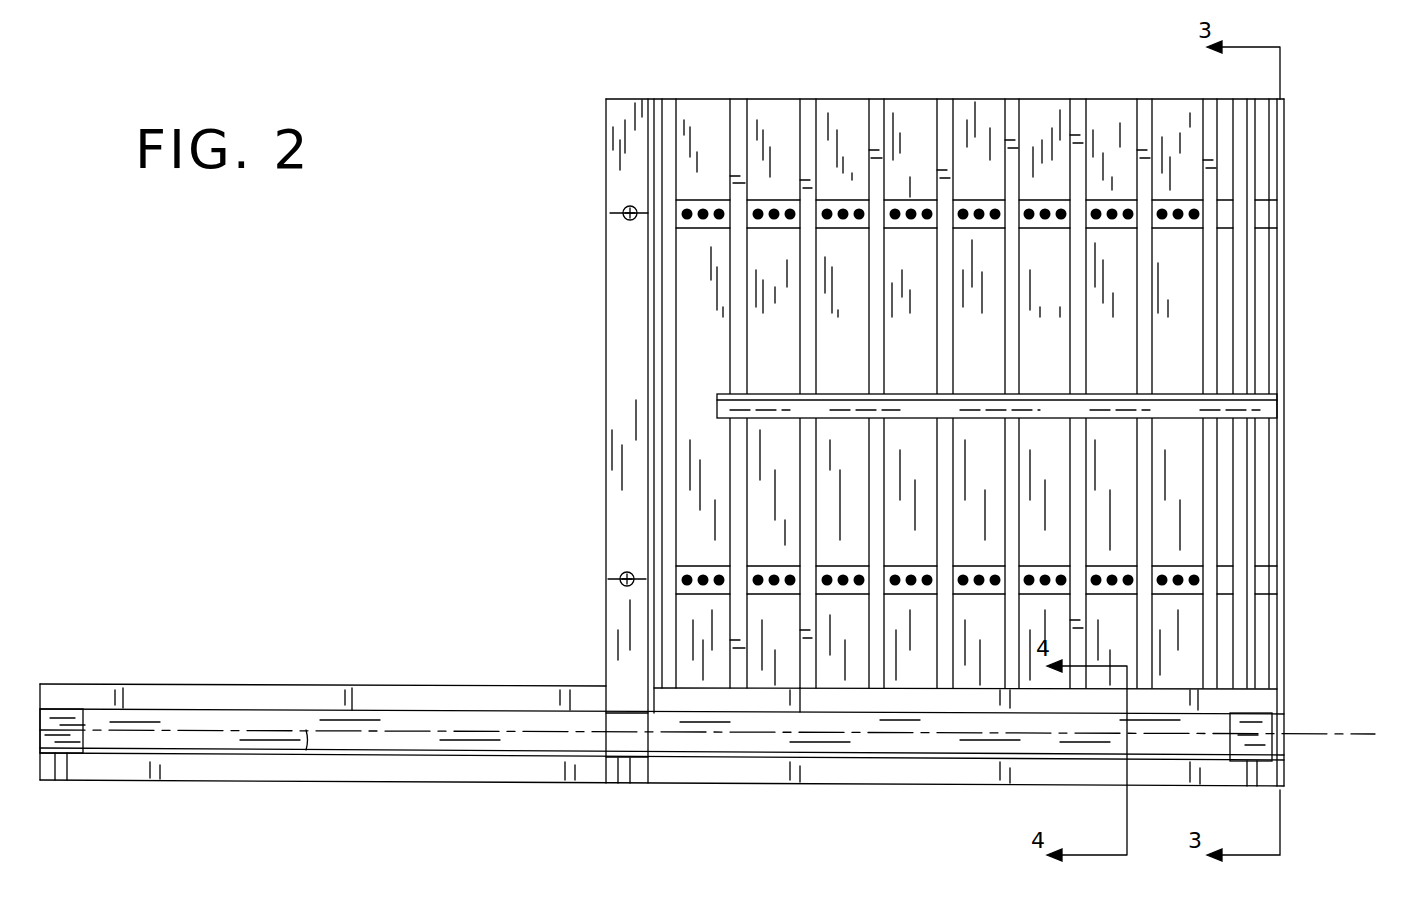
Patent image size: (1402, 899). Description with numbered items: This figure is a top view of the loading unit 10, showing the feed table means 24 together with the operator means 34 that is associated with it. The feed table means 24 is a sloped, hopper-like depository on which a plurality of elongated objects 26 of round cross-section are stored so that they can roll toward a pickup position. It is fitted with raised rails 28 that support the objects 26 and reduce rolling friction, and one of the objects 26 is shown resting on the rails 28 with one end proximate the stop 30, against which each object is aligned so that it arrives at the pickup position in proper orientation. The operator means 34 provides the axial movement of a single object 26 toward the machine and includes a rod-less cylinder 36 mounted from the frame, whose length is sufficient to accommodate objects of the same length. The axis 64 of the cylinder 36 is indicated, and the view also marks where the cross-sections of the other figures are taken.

The loading unit 10 is at (435, 355).
The feed table means 24 is at (697, 97).
The elongated objects 26 is at (757, 393).
The raised rails 28 is at (937, 118).
The stop 30 is at (1284, 332).
The operator means 34 is at (533, 687).
The rod-less cylinder 36 is at (373, 713).
The axis of the cylinder 64 is at (303, 762).